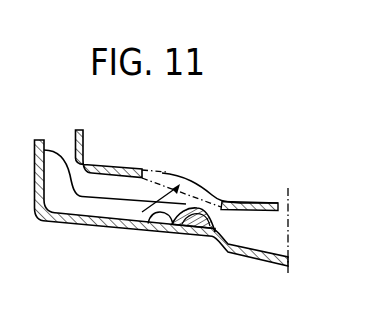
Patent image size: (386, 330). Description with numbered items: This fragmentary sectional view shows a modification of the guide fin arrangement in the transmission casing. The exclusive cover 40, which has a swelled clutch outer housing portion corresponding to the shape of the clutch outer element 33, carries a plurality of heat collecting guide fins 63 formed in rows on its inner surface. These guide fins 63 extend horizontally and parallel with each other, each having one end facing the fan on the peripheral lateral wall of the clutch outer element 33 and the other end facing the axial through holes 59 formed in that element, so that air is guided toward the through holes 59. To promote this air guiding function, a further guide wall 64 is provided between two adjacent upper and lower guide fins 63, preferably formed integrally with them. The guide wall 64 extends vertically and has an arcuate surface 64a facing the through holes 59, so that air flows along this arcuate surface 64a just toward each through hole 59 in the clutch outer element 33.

The clutch outer element 33 is at (84, 134).
The axial through holes 59 is at (167, 172).
The heat collecting guide fins 63 is at (81, 206).
The exclusive cover 40 is at (99, 231).
The arcuate surface 64a is at (151, 232).
The guide wall 64 is at (193, 236).